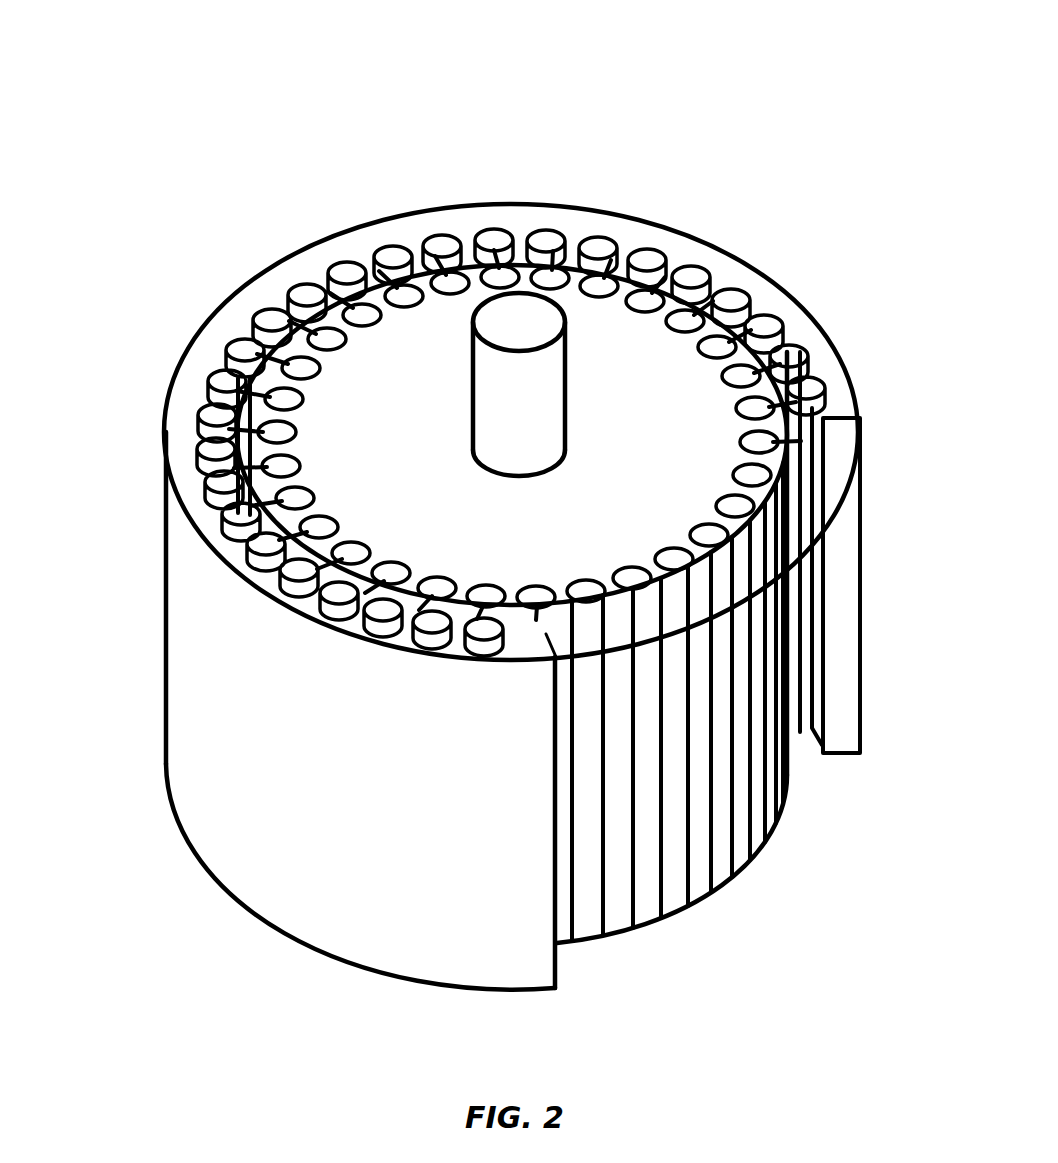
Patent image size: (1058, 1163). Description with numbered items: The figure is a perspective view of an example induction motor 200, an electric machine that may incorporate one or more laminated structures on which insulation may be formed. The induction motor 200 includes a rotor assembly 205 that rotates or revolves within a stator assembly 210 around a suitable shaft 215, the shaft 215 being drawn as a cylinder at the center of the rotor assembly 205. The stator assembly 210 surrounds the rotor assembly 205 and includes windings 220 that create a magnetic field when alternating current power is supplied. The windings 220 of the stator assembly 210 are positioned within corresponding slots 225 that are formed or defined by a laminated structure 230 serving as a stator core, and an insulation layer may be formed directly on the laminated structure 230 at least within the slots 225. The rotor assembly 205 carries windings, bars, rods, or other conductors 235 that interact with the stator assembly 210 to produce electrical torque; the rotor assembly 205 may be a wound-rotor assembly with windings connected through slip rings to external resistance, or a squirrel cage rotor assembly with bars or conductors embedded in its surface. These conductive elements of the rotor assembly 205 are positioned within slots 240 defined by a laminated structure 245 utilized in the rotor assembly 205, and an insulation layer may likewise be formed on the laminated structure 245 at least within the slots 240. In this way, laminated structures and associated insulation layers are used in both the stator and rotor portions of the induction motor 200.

The induction motor 200 is at (257, 68).
The rotor assembly 205 is at (662, 397).
The stator assembly 210 is at (286, 736).
The shaft 215 is at (524, 326).
The windings 220 is at (784, 317).
The slots 225 is at (201, 455).
The laminated structure 230 is at (327, 896).
The conductors 235 is at (543, 267).
The slots 240 is at (772, 490).
The laminated structure 245 is at (704, 455).